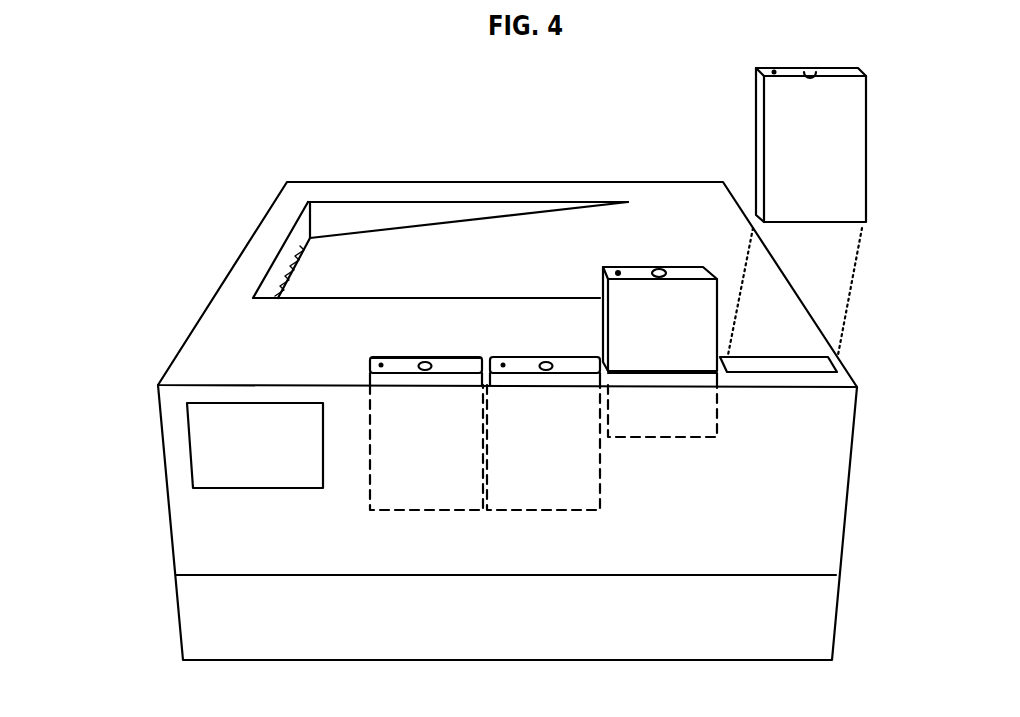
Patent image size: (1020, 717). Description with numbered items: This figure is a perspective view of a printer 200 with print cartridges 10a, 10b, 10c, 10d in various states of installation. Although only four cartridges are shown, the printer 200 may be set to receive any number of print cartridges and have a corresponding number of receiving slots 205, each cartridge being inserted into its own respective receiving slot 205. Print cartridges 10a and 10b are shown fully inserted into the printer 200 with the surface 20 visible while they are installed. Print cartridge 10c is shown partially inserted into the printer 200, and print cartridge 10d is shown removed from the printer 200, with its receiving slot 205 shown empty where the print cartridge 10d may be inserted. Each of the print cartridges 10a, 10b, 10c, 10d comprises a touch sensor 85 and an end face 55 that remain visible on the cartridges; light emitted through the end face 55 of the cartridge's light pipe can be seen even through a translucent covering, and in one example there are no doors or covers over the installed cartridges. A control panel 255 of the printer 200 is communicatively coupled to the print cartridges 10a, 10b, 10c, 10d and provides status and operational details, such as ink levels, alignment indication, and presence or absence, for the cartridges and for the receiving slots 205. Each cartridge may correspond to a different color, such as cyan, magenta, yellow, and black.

The printer 200 is at (50, 215).
The surface 20 is at (403, 360).
The print cartridge 10a is at (372, 363).
The print cartridge 10b is at (513, 357).
The print cartridge 10c is at (688, 267).
The print cartridge 10d is at (866, 150).
The end face 55 is at (618, 272).
The touch sensor 85 is at (660, 270).
The receiving slot 205 is at (790, 365).
The control panel 255 is at (190, 448).